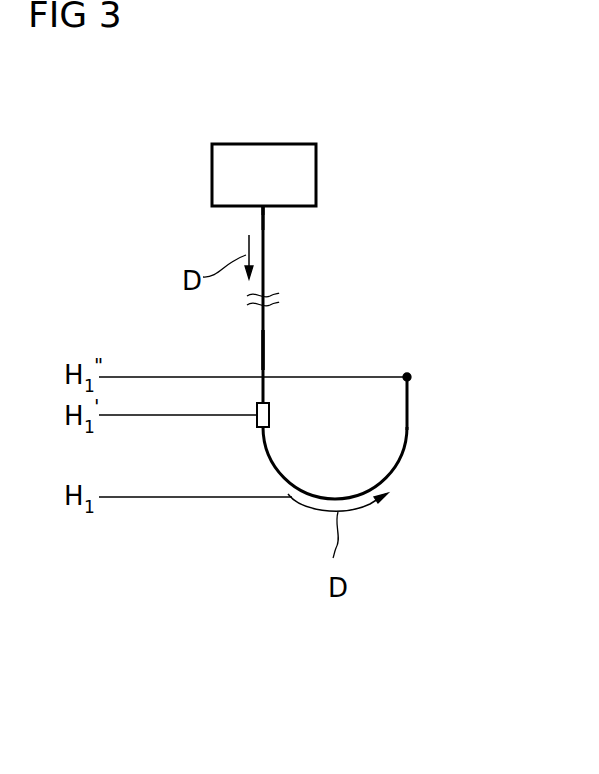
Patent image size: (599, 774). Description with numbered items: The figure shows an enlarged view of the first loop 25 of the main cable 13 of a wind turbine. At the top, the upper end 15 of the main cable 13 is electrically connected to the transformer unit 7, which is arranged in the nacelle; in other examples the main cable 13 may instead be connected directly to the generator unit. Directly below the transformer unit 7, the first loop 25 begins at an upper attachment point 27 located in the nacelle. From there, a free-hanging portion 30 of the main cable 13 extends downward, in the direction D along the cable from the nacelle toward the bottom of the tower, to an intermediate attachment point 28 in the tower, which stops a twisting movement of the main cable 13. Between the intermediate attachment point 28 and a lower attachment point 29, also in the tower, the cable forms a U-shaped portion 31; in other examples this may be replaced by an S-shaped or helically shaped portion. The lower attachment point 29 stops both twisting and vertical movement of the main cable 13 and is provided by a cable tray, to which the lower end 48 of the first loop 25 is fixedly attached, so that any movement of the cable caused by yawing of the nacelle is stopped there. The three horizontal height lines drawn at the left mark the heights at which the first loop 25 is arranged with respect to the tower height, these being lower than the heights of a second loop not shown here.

The first loop 25 is at (150, 150).
The transformer unit 7 is at (262, 143).
The upper end 15 is at (265, 208).
The upper attachment point 27 is at (260, 207).
The free-hanging portion 30 is at (265, 322).
The main cable 13 is at (262, 350).
The intermediate attachment point 28 is at (271, 412).
The U-shaped portion 31 is at (390, 476).
The lower end 48 is at (410, 390).
The lower attachment point 29 is at (412, 377).